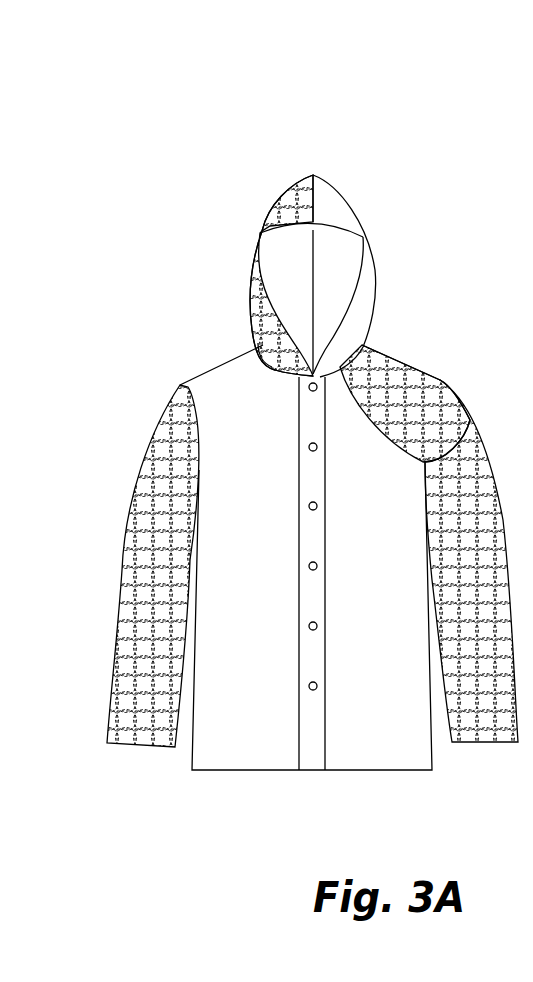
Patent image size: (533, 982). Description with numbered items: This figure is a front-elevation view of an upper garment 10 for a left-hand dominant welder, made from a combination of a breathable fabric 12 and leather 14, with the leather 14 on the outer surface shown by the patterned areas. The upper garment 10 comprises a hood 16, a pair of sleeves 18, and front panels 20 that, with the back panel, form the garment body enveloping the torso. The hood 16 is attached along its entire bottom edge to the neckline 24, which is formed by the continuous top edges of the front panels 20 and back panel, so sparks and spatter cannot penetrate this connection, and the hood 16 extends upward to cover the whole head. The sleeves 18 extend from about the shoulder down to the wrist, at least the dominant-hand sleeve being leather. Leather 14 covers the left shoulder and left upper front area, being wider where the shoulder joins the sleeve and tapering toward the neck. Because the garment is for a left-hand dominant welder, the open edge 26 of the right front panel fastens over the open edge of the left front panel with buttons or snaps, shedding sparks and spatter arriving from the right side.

The upper garment 10 is at (157, 338).
The breathable fabric 12 is at (400, 748).
The leather 14 is at (278, 200).
The hood 16 is at (347, 203).
The sleeves 18 is at (167, 550).
The front panel 20 is at (260, 592).
The neckline 24 is at (257, 353).
The open edge 26 is at (325, 745).